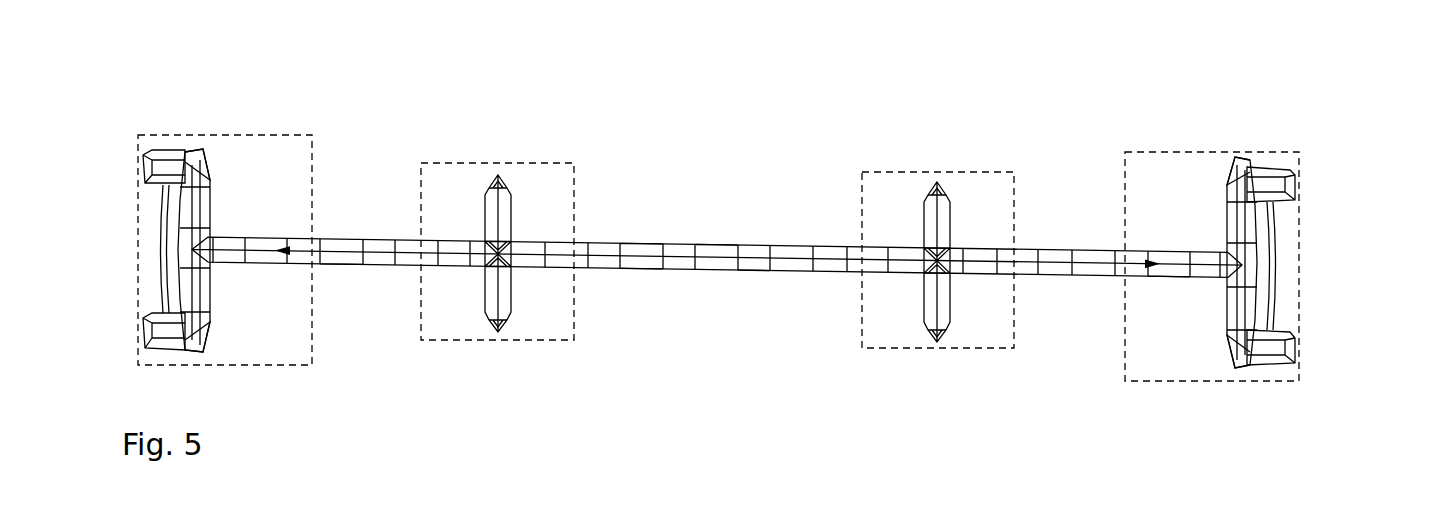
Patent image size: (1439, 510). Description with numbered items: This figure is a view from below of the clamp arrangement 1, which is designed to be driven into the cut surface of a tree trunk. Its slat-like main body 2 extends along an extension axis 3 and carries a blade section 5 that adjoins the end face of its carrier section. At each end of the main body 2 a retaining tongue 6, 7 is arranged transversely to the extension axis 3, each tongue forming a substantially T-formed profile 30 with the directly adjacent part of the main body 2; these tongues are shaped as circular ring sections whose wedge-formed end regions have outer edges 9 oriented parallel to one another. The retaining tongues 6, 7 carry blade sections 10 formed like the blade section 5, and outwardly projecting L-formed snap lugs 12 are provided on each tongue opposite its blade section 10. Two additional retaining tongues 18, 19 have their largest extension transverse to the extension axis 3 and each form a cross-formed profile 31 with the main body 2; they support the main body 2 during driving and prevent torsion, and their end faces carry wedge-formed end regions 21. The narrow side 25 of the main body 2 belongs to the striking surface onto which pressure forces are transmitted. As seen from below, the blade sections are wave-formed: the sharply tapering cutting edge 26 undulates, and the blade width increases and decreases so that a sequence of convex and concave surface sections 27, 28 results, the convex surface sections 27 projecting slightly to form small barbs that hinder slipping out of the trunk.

The clamp arrangement 1 is at (751, 247).
The main body 2 is at (780, 243).
The extension axis 3 is at (636, 256).
The blade section 5 is at (706, 257).
The retaining tongue 6 is at (187, 172).
The retaining tongue 7 is at (1251, 190).
The outer edge 9 is at (204, 150).
The blade section 10 is at (187, 292).
The snap lug 12 is at (131, 147).
The additional retaining tongue 18 is at (490, 208).
The additional retaining tongue 19 is at (945, 222).
The wedge-formed end region 21 is at (494, 176).
The narrow side 25 is at (1190, 278).
The cutting edge 26 is at (350, 253).
The convex surface section 27 is at (640, 270).
The concave surface section 28 is at (753, 270).
The T-formed profile 30 is at (285, 135).
The cross-formed profile 31 is at (545, 165).